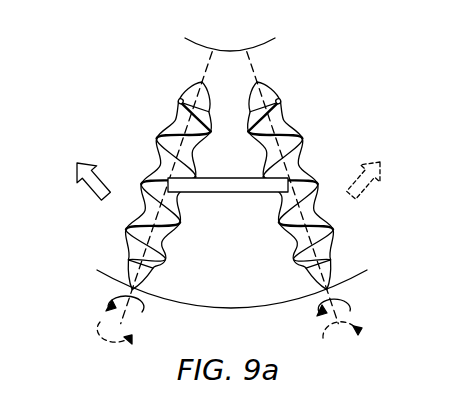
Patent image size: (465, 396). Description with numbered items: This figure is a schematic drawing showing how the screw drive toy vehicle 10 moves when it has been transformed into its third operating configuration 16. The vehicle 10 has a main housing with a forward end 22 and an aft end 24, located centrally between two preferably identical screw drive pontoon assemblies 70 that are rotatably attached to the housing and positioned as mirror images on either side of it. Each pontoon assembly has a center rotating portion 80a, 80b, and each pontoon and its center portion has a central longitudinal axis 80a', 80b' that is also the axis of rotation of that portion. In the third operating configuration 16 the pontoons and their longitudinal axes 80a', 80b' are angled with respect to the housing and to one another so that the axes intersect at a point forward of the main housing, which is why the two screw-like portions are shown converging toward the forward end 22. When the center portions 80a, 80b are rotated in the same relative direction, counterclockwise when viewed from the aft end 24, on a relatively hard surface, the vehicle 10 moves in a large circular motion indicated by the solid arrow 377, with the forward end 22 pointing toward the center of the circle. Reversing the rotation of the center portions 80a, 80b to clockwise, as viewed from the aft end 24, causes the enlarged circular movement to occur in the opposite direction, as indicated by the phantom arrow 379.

The screw drive toy vehicle 10 is at (307, 34).
The third operating configuration 16 is at (217, 38).
The forward end 22 is at (215, 81).
The aft end 24 is at (215, 293).
The screw drive pontoon assemblies 70 is at (115, 262).
The center rotating portion 80a is at (158, 188).
The central longitudinal axis 80a' is at (172, 80).
The center rotating portion 80b is at (302, 188).
The central longitudinal axis 80b' is at (286, 80).
The solid arrow 377 is at (97, 198).
The phantom arrow 379 is at (364, 197).